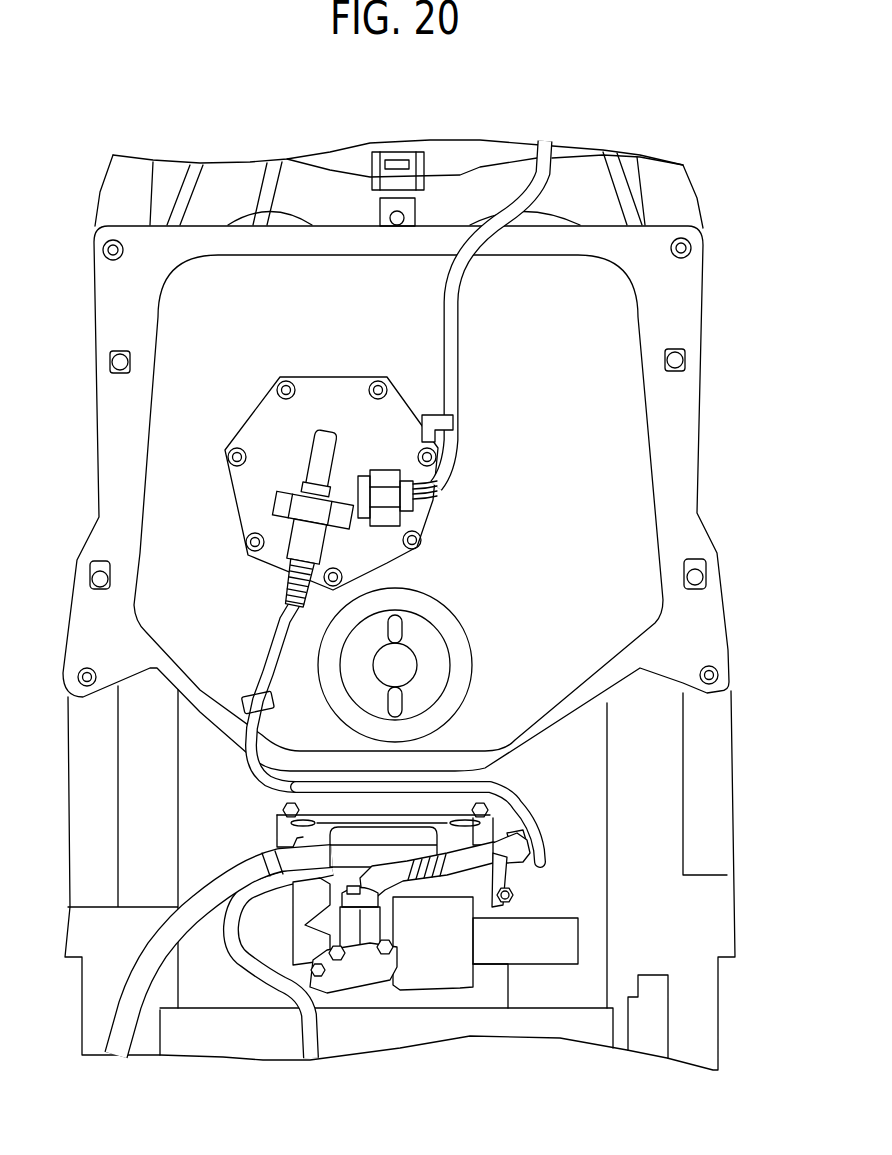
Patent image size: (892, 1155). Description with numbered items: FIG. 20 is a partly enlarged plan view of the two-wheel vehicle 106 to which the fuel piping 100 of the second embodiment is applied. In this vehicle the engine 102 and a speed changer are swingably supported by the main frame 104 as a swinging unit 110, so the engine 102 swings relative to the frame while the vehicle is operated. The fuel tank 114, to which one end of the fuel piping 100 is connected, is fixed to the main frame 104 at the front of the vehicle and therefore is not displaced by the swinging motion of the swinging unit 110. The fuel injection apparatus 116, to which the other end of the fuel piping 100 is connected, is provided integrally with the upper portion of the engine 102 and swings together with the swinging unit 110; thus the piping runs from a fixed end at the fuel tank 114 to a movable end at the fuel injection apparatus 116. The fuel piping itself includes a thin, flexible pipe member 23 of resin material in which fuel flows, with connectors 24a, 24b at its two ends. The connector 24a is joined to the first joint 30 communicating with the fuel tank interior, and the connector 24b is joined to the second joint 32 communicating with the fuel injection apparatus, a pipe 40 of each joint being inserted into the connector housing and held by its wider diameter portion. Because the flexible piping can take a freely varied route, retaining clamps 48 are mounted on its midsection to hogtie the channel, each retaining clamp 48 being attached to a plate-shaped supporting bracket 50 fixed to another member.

The two-wheel vehicle 106 is at (745, 105).
The fuel tank 114 is at (620, 343).
The main frame 104 is at (707, 763).
The engine 102 is at (587, 792).
The second joint 32 is at (262, 488).
The pipe 40 is at (318, 432).
The connector 24b is at (300, 560).
The pipe member 23 is at (283, 609).
The fuel piping 100 is at (452, 780).
The retaining clamp 48 is at (249, 693).
The supporting bracket 50 is at (513, 892).
The connector 24a is at (388, 897).
The first joint 30 is at (362, 935).
The fuel injection apparatus 116 is at (427, 975).
The swinging unit 110 is at (233, 993).